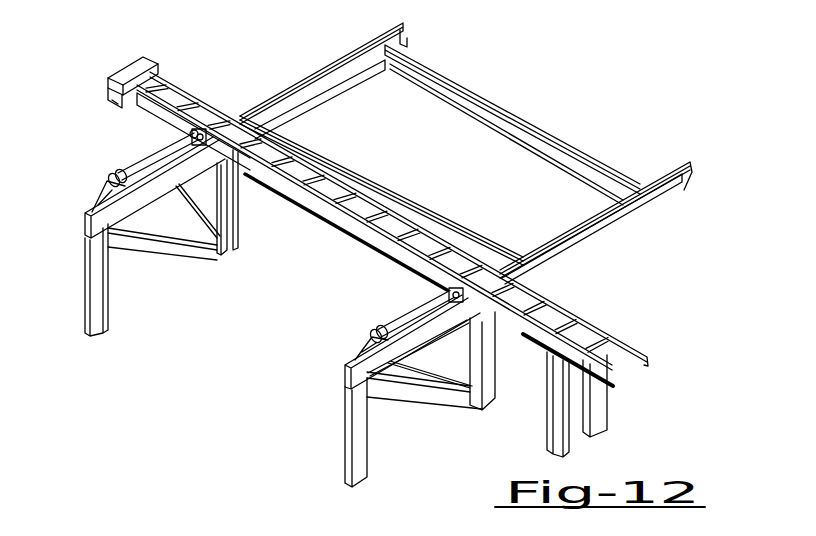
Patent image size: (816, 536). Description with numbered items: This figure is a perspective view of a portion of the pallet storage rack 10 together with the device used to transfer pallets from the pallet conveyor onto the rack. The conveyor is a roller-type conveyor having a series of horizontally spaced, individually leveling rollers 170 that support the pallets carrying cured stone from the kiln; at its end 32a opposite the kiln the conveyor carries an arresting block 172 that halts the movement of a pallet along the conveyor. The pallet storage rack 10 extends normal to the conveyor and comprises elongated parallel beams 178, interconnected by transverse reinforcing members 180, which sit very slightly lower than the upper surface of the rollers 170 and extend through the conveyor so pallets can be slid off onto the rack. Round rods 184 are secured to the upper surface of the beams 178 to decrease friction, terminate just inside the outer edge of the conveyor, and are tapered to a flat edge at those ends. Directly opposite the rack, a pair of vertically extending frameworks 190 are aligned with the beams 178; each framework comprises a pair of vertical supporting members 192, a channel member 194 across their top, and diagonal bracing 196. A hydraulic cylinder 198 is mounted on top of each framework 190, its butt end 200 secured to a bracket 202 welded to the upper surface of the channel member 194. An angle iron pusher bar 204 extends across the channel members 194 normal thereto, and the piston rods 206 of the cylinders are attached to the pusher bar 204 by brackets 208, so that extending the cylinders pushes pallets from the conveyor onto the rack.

The pallet storage rack 10 is at (466, 153).
The end of the conveyor 32a is at (192, 130).
The rollers 170 is at (392, 221).
The arresting block 172 is at (146, 50).
The beams 178 is at (352, 72).
The transverse reinforcing members 180 is at (527, 133).
The rods 184 is at (322, 70).
The frameworks 190 is at (325, 312).
The vertical supporting members 192 is at (85, 262).
The channel member 194 is at (147, 197).
The diagonal bracing 196 is at (175, 243).
The hydraulic cylinder 198 is at (152, 160).
The butt end 200 is at (120, 173).
The brackets 202 is at (107, 192).
The angle iron pusher bar 204 is at (350, 216).
The piston rods 206 is at (177, 127).
The brackets 208 is at (204, 128).